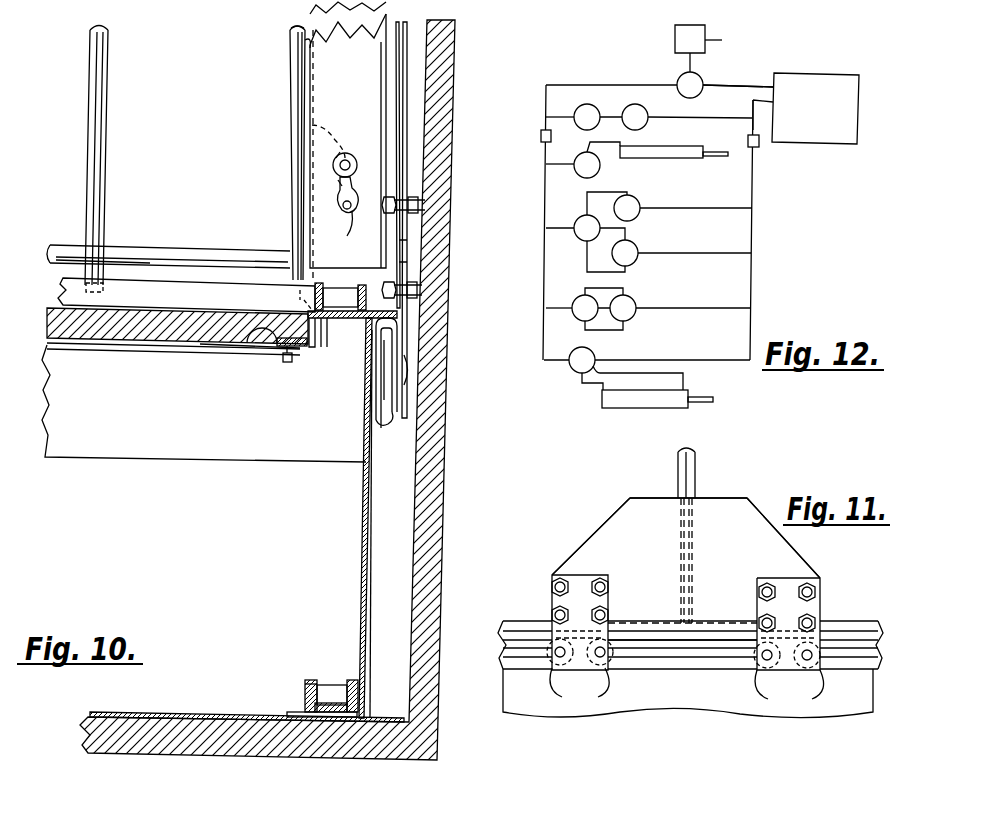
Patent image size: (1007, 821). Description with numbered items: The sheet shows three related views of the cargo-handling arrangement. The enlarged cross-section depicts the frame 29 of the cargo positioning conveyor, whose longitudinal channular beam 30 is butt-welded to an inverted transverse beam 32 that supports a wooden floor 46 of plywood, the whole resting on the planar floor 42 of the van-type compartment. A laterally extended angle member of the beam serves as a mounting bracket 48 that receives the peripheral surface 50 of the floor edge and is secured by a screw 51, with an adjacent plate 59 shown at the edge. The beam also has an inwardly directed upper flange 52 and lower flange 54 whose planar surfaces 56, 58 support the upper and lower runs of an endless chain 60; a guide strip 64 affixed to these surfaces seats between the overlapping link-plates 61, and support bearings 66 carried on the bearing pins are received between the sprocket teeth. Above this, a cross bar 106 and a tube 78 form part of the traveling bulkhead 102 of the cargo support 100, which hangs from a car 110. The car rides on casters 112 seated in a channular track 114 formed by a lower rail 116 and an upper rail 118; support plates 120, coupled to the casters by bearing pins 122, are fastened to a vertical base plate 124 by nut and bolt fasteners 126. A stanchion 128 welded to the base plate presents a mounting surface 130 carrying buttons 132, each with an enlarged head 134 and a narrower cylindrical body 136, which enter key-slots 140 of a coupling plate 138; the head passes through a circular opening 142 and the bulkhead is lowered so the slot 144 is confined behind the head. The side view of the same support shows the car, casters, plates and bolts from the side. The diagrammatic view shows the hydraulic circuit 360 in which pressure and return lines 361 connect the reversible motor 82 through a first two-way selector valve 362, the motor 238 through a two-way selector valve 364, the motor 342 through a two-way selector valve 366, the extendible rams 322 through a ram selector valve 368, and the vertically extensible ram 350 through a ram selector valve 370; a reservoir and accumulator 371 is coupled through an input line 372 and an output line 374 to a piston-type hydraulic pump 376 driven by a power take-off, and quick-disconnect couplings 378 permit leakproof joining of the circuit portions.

In FIG. 10, the frame 29 is at (361, 562).
In FIG. 10, the longitudinal channular beam 30 is at (364, 516).
In FIG. 10, the transverse beam 32 is at (183, 440).
In FIG. 10, the floor 42 is at (174, 712).
In FIG. 10, the wooden floor 46 is at (80, 330).
In FIG. 10, the mounting bracket 48 is at (313, 322).
In FIG. 10, the peripheral surface 50 is at (272, 342).
In FIG. 10, the screw 51 is at (262, 306).
In FIG. 10, the upper flange 52 is at (326, 348).
In FIG. 10, the lower flange 54 is at (290, 714).
In FIG. 10, the planar surface 56 is at (305, 308).
In FIG. 10, the planar surface 58 is at (302, 710).
In FIG. 10, the shim plate 59 is at (245, 337).
In FIG. 10, the endless chain 60 is at (398, 320).
In FIG. 10, the link-plate 61 is at (310, 686).
In FIG. 10, the guide strip 64 is at (345, 320).
In FIG. 10, the support bearing 66 is at (345, 292).
In FIG. 10, the cross tube 78 is at (132, 292).
In FIG. 12, the reversible motor 82 is at (647, 122).
In FIG. 11, the cargo support 100 is at (677, 468).
In FIG. 10, the traveling bulkhead 102 is at (312, 80).
In FIG. 11, the traveling bulkhead 102 is at (700, 470).
In FIG. 10, the cross bar 106 is at (100, 132).
In FIG. 10, the car 110 is at (418, 240).
In FIG. 11, the car 110 is at (754, 494).
In FIG. 10, the caster 112 is at (386, 396).
In FIG. 11, the caster 112 is at (687, 692).
In FIG. 10, the channular track 114 is at (389, 424).
In FIG. 11, the channular track 114 is at (670, 640).
In FIG. 10, the lower rail 116 is at (378, 430).
In FIG. 11, the lower rail 116 is at (688, 672).
In FIG. 10, the upper rail 118 is at (397, 330).
In FIG. 10, the support plate 120 is at (408, 262).
In FIG. 11, the support plate 120 is at (782, 585).
In FIG. 10, the bearing pin 122 is at (407, 370).
In FIG. 10, the base plate 124 is at (402, 100).
In FIG. 11, the base plate 124 is at (612, 535).
In FIG. 10, the nut and bolt fastener 126 is at (418, 205).
In FIG. 11, the nut and bolt fastener 126 is at (813, 592).
In FIG. 10, the stanchion 128 is at (294, 26).
In FIG. 11, the stanchion 128 is at (692, 522).
In FIG. 10, the mounting surface 130 is at (308, 44).
In FIG. 10, the button 132 is at (333, 165).
In FIG. 10, the head 134 is at (342, 155).
In FIG. 10, the cylindrical body 136 is at (308, 118).
In FIG. 10, the coupling plate 138 is at (375, 122).
In FIG. 11, the coupling plate 138 is at (682, 527).
In FIG. 10, the key-slot 140 is at (343, 192).
In FIG. 10, the circular opening 142 is at (333, 237).
In FIG. 10, the slot 144 is at (340, 184).
In FIG. 12, the motor 238 is at (640, 214).
In FIG. 12, the extendible ram 322 is at (688, 158).
In FIG. 12, the motor 342 is at (636, 313).
In FIG. 12, the vertically extensible ram 350 is at (630, 406).
In FIG. 12, the hydraulic circuit 360 is at (760, 281).
In FIG. 12, the pressure and return lines 361 is at (558, 226).
In FIG. 12, the first two-way selector valve 362 is at (576, 106).
In FIG. 12, the two-way selector valve 364 is at (576, 237).
In FIG. 12, the two-way selector valve 366 is at (576, 315).
In FIG. 12, the ram selector valve 368 is at (600, 165).
In FIG. 12, the ram selector valve 370 is at (575, 370).
In FIG. 12, the hydraulic reservoir and accumulator 371 is at (830, 144).
In FIG. 12, the input line 372 is at (755, 108).
In FIG. 12, the output line 374 is at (730, 85).
In FIG. 12, the hydraulic pump 376 is at (680, 79).
In FIG. 12, the quick-disconnect coupling 378 is at (757, 148).